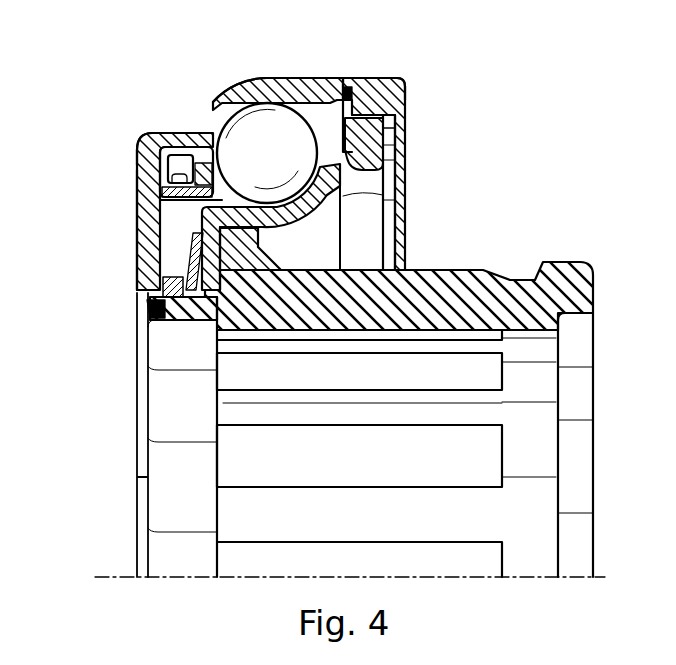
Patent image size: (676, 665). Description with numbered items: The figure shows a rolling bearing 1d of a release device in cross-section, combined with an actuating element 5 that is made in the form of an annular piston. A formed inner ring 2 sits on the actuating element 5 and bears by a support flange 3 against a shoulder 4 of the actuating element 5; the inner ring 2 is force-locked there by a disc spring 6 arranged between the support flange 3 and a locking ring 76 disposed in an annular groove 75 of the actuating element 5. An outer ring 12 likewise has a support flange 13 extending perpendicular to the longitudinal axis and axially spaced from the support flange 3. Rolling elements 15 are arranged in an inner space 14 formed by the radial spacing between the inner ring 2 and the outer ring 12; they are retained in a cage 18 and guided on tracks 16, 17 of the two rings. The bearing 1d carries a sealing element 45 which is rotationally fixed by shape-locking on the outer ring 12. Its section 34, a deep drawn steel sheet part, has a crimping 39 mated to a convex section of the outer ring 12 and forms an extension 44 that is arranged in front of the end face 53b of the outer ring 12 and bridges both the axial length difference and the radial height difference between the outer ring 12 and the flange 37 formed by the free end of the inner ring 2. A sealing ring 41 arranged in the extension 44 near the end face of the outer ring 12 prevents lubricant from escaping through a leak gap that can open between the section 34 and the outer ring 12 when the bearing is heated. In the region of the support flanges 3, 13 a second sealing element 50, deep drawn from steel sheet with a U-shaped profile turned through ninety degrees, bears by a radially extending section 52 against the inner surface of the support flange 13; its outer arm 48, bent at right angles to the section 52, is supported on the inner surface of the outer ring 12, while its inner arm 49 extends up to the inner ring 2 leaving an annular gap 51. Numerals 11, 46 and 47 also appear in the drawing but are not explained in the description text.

The rolling bearing 1d is at (132, 262).
The inner ring 2 is at (233, 201).
The support flange 3 is at (213, 215).
The shoulder 4 is at (259, 243).
The actuating element 5 is at (538, 263).
The disc spring 6 is at (188, 270).
The axis of rotation 11 is at (103, 575).
The outer ring 12 is at (158, 130).
The support flange 13 is at (143, 264).
The inner space 14 is at (315, 114).
The rolling elements 15 is at (283, 163).
The track 16 is at (287, 200).
The track 17 is at (206, 166).
The cage 18 is at (183, 148).
The section 34 is at (284, 84).
The flange 37 is at (387, 163).
The crimping 39 is at (226, 100).
The sealing ring 41 is at (344, 87).
The extension 44 is at (392, 79).
The sealing element 45 is at (366, 74).
The seal lip 46 is at (357, 134).
The seal core 47 is at (392, 132).
The outer arm 48 is at (165, 140).
The inner arm 49 is at (198, 181).
The sealing element 50 is at (150, 180).
The annular gap 51 is at (213, 203).
The radially extending section 52 is at (141, 152).
The end face 53b is at (346, 107).
The annular groove 75 is at (170, 305).
The locking ring 76 is at (147, 305).